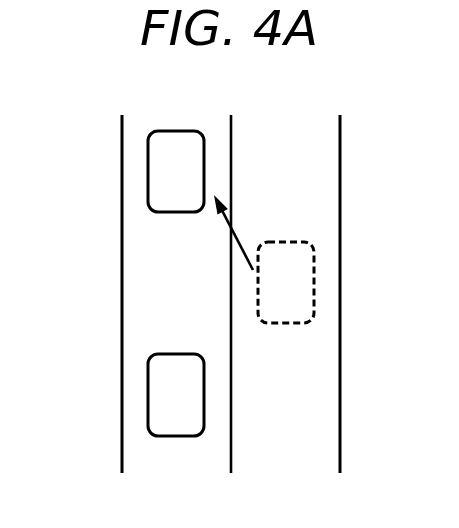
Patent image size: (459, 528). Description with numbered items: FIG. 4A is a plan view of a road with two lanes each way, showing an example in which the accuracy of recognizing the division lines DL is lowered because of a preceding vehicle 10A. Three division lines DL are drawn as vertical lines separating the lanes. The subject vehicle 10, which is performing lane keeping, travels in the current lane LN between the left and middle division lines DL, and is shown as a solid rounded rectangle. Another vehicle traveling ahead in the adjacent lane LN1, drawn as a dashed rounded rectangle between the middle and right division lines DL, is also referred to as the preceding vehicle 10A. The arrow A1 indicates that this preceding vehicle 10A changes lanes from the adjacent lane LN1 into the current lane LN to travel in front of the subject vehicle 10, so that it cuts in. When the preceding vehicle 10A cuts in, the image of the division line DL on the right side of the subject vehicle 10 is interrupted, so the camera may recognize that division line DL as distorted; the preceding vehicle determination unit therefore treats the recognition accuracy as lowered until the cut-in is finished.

The preceding vehicle 10A is at (148, 167).
The subject vehicle 10 is at (148, 383).
The current lane LN is at (146, 288).
The adjacent lane LN1 is at (307, 170).
The division line DL is at (120, 460).
The arrow A1 is at (243, 233).